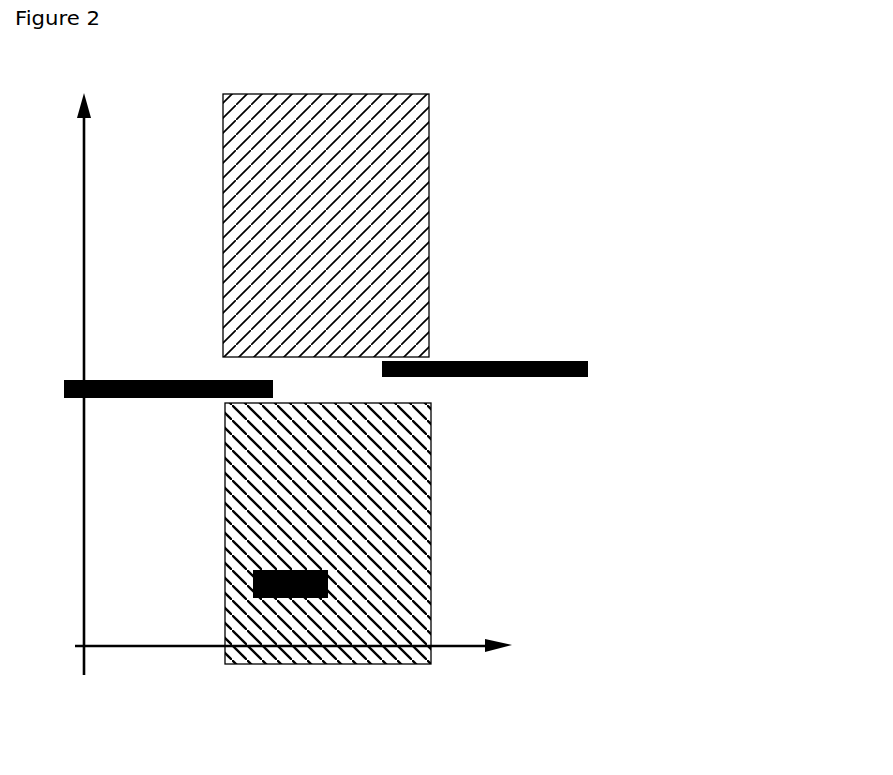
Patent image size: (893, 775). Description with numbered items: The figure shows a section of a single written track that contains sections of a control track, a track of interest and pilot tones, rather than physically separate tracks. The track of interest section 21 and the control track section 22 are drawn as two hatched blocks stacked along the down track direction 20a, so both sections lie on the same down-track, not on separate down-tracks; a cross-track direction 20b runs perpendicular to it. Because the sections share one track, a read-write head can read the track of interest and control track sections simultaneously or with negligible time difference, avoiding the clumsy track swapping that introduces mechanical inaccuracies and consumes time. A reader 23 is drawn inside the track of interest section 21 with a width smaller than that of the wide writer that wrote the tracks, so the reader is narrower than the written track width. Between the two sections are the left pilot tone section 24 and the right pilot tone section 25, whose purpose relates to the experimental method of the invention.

The down track direction 20a is at (154, 373).
The cross-track direction 20b is at (362, 616).
The track of interest section 21 is at (490, 533).
The control track section 22 is at (492, 225).
The reader 23 is at (294, 606).
The left pilot tone section 24 is at (233, 372).
The right pilot tone section 25 is at (523, 356).